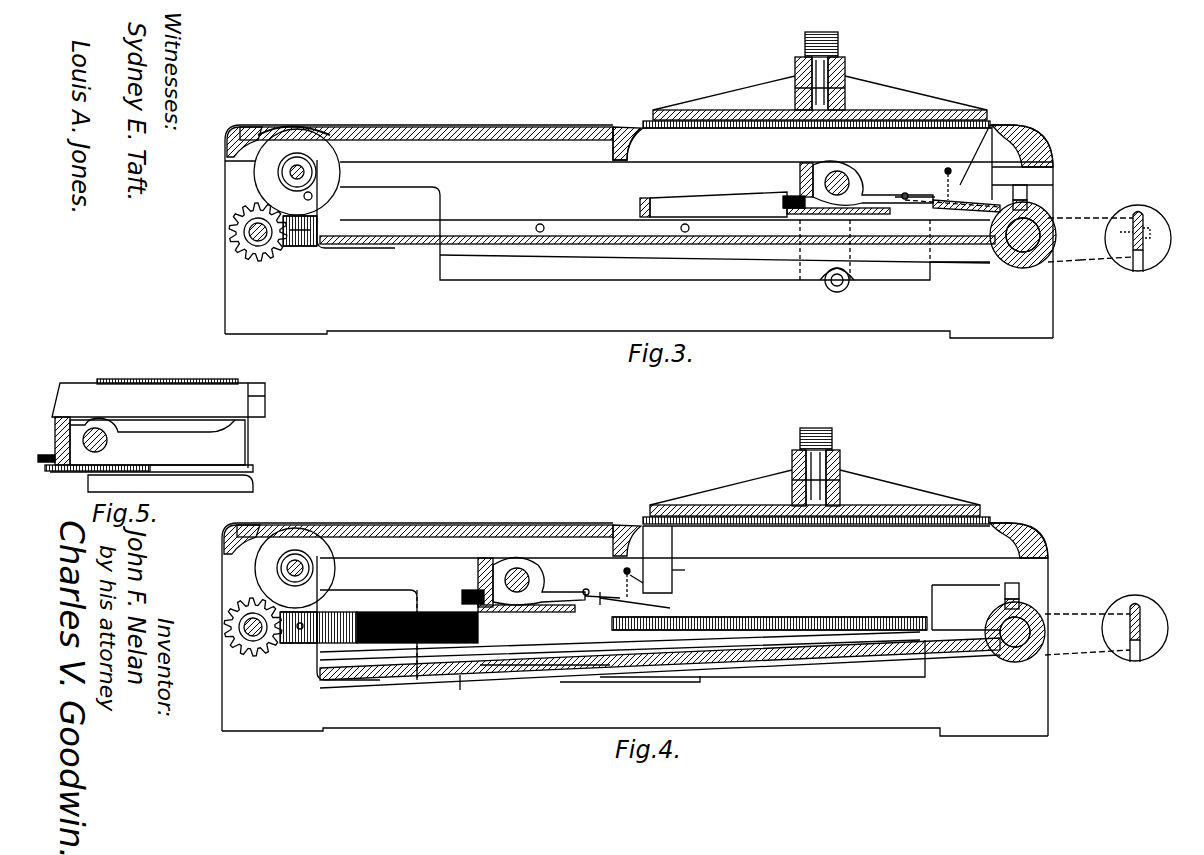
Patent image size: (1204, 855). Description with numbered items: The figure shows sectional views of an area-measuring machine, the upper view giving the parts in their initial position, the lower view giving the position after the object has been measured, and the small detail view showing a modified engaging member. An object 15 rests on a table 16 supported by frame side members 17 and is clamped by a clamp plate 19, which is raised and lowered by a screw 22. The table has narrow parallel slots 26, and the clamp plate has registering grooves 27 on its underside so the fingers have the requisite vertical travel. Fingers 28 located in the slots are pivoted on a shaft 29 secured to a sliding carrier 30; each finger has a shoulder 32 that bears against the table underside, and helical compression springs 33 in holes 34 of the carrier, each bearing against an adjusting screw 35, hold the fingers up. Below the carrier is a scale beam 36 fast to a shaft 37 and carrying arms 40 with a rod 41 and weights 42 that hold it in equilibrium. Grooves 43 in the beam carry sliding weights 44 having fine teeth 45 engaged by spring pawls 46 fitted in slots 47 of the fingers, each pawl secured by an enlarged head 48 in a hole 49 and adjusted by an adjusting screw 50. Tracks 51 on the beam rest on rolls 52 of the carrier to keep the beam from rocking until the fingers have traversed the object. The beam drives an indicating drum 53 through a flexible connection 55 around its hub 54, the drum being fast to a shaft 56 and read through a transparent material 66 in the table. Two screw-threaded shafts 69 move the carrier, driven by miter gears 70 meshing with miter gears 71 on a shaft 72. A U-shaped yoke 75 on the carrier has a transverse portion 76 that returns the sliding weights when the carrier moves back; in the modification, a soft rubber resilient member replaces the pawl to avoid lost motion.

In FIG. 3, the object 15 is at (990, 118).
In FIG. 4, the object 15 is at (985, 516).
In FIG. 3, the table 16 is at (535, 125).
In FIG. 3, the side members 17 is at (836, 325).
In FIG. 4, the side members 17 is at (840, 722).
In FIG. 3, the clamp plate 19 is at (880, 115).
In FIG. 4, the clamp plate 19 is at (870, 512).
In FIG. 3, the screw 22 is at (840, 45).
In FIG. 4, the screw 22 is at (832, 440).
In FIG. 3, the slots 26 is at (640, 140).
In FIG. 4, the slots 26 is at (855, 535).
In FIG. 3, the grooves 27 is at (690, 120).
In FIG. 4, the grooves 27 is at (935, 515).
In FIG. 3, the fingers 28 is at (966, 155).
In FIG. 4, the fingers 28 is at (672, 545).
In FIG. 3, the shaft 29 is at (850, 175).
In FIG. 4, the shaft 29 is at (518, 568).
In FIG. 3, the carrier 30 is at (800, 160).
In FIG. 4, the carrier 30 is at (485, 572).
In FIG. 3, the shoulder 32 is at (1016, 178).
In FIG. 4, the shoulder 32 is at (690, 574).
In FIG. 3, the helical compression springs 33 is at (790, 214).
In FIG. 4, the helical compression springs 33 is at (490, 612).
In FIG. 3, the holes 34 is at (800, 195).
In FIG. 3, the screw 35 is at (785, 198).
In FIG. 4, the screw 35 is at (470, 594).
In FIG. 3, the scale beam 36 is at (1013, 268).
In FIG. 4, the scale beam 36 is at (462, 672).
In FIG. 3, the shaft 37 is at (1035, 225).
In FIG. 4, the shaft 37 is at (1015, 640).
In FIG. 3, the arms 40 is at (1078, 262).
In FIG. 3, the rod 41 is at (1145, 222).
In FIG. 4, the rod 41 is at (1142, 628).
In FIG. 3, the weights 42 is at (1150, 205).
In FIG. 4, the weights 42 is at (1140, 588).
In FIG. 3, the grooves 43 is at (470, 235).
In FIG. 4, the grooves 43 is at (405, 672).
In FIG. 3, the sliding weights 44 is at (727, 228).
In FIG. 4, the sliding weights 44 is at (815, 635).
In FIG. 5, the sliding weights 44 is at (220, 485).
In FIG. 3, the teeth 45 is at (965, 215).
In FIG. 4, the teeth 45 is at (765, 635).
In FIG. 5, the teeth 45 is at (253, 468).
In FIG. 4, the pawls 46 is at (670, 608).
In FIG. 5, the pawls 46 is at (248, 452).
In FIG. 3, the slots 47 is at (925, 185).
In FIG. 4, the slots 47 is at (626, 572).
In FIG. 3, the enlarged head 48 is at (910, 200).
In FIG. 4, the enlarged head 48 is at (575, 600).
In FIG. 3, the hole 49 is at (907, 193).
In FIG. 4, the hole 49 is at (586, 589).
In FIG. 3, the adjusting screws 50 is at (950, 178).
In FIG. 4, the adjusting screws 50 is at (647, 582).
In FIG. 3, the tracks 51 is at (660, 262).
In FIG. 4, the tracks 51 is at (600, 678).
In FIG. 3, the rolls 52 is at (845, 288).
In FIG. 3, the drum 53 is at (310, 138).
In FIG. 4, the drum 53 is at (332, 555).
In FIG. 3, the hub 54 is at (312, 166).
In FIG. 4, the hub 54 is at (310, 566).
In FIG. 3, the flexible connection 55 is at (312, 198).
In FIG. 4, the flexible connection 55 is at (316, 680).
In FIG. 3, the shaft 56 is at (290, 174).
In FIG. 4, the shaft 56 is at (288, 570).
In FIG. 3, the transparent material 66 is at (295, 128).
In FIG. 4, the transparent material 66 is at (285, 525).
In FIG. 4, the screw-threaded shafts 69 is at (735, 612).
In FIG. 3, the miter gears 70 is at (290, 246).
In FIG. 4, the miter gears 70 is at (278, 645).
In FIG. 3, the miter gears 71 is at (228, 235).
In FIG. 4, the miter gears 71 is at (226, 618).
In FIG. 3, the shaft 72 is at (258, 242).
In FIG. 4, the shaft 72 is at (240, 635).
In FIG. 3, the U-shaped yoke 75 is at (675, 199).
In FIG. 4, the U-shaped yoke 75 is at (375, 598).
In FIG. 3, the transverse portion 76 is at (640, 210).